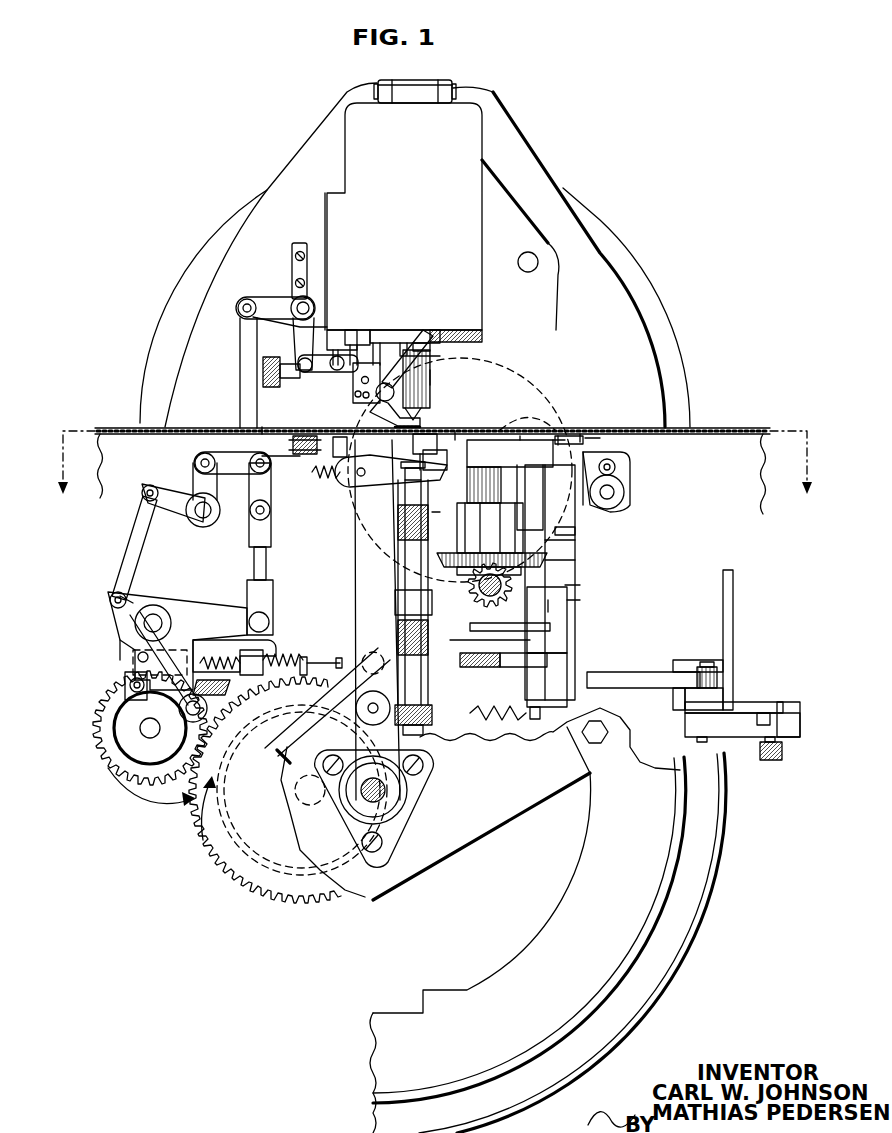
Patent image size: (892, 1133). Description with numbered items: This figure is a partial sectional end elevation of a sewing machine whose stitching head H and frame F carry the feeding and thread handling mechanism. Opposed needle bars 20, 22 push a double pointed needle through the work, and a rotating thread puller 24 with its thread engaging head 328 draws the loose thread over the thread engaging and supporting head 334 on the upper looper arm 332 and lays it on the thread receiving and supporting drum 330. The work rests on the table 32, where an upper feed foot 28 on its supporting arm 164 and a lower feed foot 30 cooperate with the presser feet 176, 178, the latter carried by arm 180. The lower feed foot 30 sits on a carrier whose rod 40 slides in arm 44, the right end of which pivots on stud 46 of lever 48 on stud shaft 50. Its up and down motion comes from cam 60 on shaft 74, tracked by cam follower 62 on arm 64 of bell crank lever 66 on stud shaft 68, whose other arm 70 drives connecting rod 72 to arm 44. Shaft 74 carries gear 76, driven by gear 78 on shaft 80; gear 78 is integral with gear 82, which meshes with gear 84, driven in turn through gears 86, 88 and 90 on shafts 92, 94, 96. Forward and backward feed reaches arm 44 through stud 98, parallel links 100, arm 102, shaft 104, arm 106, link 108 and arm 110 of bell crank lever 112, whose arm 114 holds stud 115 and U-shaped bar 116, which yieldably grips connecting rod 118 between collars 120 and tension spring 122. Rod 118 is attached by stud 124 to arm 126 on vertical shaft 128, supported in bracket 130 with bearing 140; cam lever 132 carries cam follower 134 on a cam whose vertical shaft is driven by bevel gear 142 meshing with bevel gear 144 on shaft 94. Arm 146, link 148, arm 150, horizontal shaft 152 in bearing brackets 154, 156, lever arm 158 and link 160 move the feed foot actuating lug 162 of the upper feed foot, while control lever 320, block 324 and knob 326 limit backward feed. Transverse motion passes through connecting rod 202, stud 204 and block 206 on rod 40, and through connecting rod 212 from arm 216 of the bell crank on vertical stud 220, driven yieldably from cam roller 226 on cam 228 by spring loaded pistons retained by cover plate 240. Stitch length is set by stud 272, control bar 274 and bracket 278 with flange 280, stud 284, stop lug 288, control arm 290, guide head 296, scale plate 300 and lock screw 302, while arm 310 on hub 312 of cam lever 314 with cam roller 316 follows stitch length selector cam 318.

The stitching head H is at (493, 152).
The frame F is at (733, 592).
The needle bar 20 is at (420, 402).
The needle bar 22 is at (400, 540).
The rotating thread puller 24 is at (360, 600).
The upper feed foot 28 is at (353, 394).
The lower feed foot 30 is at (348, 441).
The work support table 32 is at (103, 428).
The rod 40 is at (355, 487).
The arm 44 is at (430, 470).
The stud 46 is at (622, 482).
The lever 48 is at (615, 470).
The stud shaft 50 is at (614, 493).
The cam 60 is at (110, 790).
The cam follower 62 is at (228, 752).
The arm 64 is at (140, 735).
The bell crank lever 66 is at (155, 600).
The stud shaft 68 is at (130, 600).
The arm 70 is at (210, 605).
The connecting rod 72 is at (270, 574).
The shaft 74 is at (160, 750).
The gear 76 is at (148, 765).
The gear 78 is at (280, 890).
The shaft 80 is at (318, 805).
The gear 82 is at (301, 878).
The gear 84 is at (345, 638).
The gear 86 is at (575, 512).
The gear 88 is at (527, 413).
The gear 90 is at (515, 366).
The shaft 92 is at (375, 651).
The shaft 94 is at (490, 608).
The shaft 96 is at (590, 432).
The pin 98 is at (255, 456).
The parallel links 100 is at (195, 463).
The arm 102 is at (200, 490).
The shaft 104 is at (193, 522).
The arm 106 is at (175, 503).
The link 108 is at (140, 536).
The arm 110 is at (112, 604).
The bell crank lever 112 is at (128, 632).
The arm 114 is at (148, 652).
The stud 115 is at (143, 662).
The U-shaped bar 116 is at (222, 620).
The connecting rod 118 is at (485, 667).
The collars 120 is at (268, 698).
The tension spring 122 is at (262, 652).
The stud 124 is at (560, 641).
The arm 126 is at (567, 690).
The vertical shaft 128 is at (580, 531).
The bracket 130 is at (560, 541).
The cam lever 132 is at (583, 442).
The cam follower 134 is at (598, 438).
The bearing 140 is at (437, 512).
The bevel gear 142 is at (562, 562).
The bevel gear 144 is at (470, 667).
The arm 146 is at (250, 520).
The link 148 is at (243, 313).
The arm 150 is at (272, 303).
The horizontal shaft 152 is at (298, 300).
The bearing bracket 154 is at (297, 243).
The bearing bracket 156 is at (327, 275).
The lever arm 158 is at (300, 327).
The link 160 is at (298, 380).
The feed foot actuating lug 162 is at (422, 343).
The feed foot supporting arm 164 is at (392, 335).
The foot 176 is at (375, 405).
The foot 178 is at (437, 384).
The arm 180 is at (404, 340).
The connecting rod 202 is at (300, 436).
The stud 204 is at (262, 431).
The block 206 is at (318, 478).
The connecting rod 212 is at (470, 430).
The arm 216 is at (510, 455).
The vertical stud 220 is at (460, 482).
The cam roller 226 is at (560, 436).
The cam 228 is at (522, 432).
The cover plate 240 is at (560, 440).
The stud 272 is at (130, 688).
The stitch length control bar 274 is at (180, 712).
The bracket 278 is at (690, 662).
The side flange 280 is at (705, 705).
The vertical stud 284 is at (710, 665).
The stop lug 288 is at (717, 680).
The adjustable control arm 290 is at (748, 742).
The guide head 296 is at (787, 708).
The graduated scale plate 300 is at (745, 710).
The knurled lock screw 302 is at (776, 760).
The arm 310 is at (582, 606).
The hub 312 is at (552, 606).
The cam lever 314 is at (582, 587).
The cam roller 316 is at (547, 560).
The stitch length selector cam 318 is at (472, 580).
The control lever 320 is at (336, 340).
The block 324 is at (368, 345).
The knob 326 is at (265, 368).
The thread engaging head 328 is at (428, 473).
The thread receiving and supporting drum 330 is at (692, 905).
The upper looper arm 332 is at (470, 332).
The thread engaging and supporting head 334 is at (410, 358).